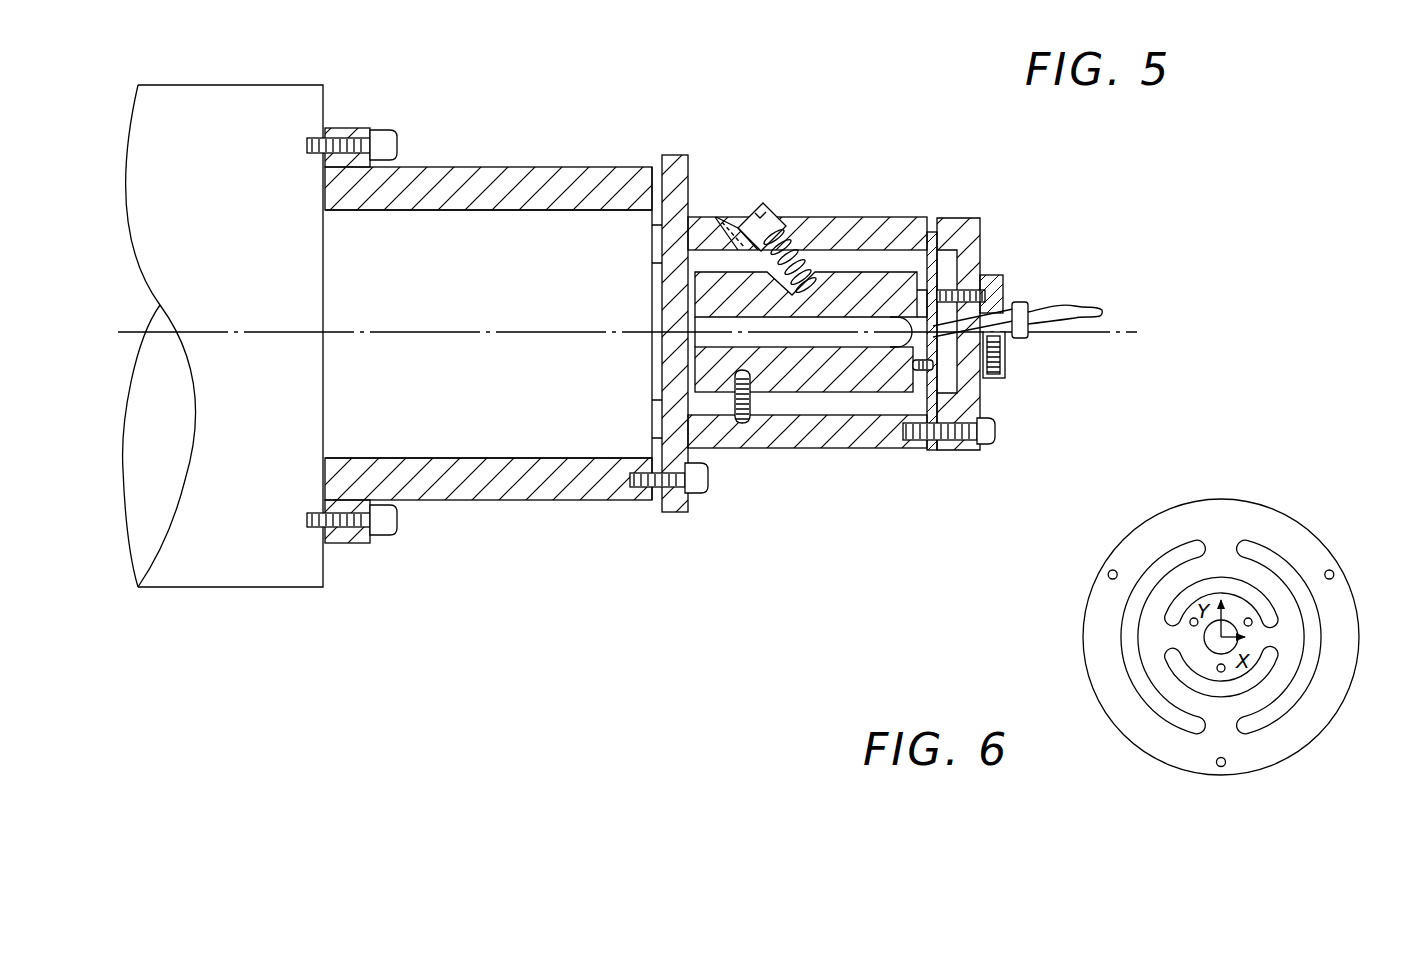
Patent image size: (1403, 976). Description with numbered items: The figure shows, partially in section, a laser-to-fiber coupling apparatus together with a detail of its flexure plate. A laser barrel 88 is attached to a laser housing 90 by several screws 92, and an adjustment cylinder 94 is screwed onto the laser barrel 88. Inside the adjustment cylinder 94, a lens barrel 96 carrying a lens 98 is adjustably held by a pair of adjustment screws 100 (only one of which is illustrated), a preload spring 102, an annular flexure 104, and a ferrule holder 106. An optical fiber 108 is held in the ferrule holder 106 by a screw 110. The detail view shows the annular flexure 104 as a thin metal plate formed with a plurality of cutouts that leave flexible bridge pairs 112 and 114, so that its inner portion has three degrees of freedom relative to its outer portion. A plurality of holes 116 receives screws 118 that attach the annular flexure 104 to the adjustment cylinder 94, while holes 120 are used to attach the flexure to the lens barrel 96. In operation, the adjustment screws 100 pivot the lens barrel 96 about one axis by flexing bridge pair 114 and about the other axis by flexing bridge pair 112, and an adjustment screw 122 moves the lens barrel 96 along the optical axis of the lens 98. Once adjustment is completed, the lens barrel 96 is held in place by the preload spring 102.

In FIG. 5, the laser barrel 88 is at (458, 165).
In FIG. 5, the laser housing 90 is at (283, 592).
In FIG. 5, the screws 92 is at (385, 137).
In FIG. 5, the adjustment cylinder 94 is at (872, 432).
In FIG. 5, the lens barrel 96 is at (713, 270).
In FIG. 5, the lens 98 is at (876, 298).
In FIG. 5, the adjustment screws 100 is at (743, 426).
In FIG. 5, the preload spring 102 is at (800, 245).
In FIG. 5, the annular flexure 104 is at (982, 396).
In FIG. 6, the annular flexure 104 is at (1155, 553).
In FIG. 5, the ferrule holder 106 is at (956, 236).
In FIG. 5, the optical fiber 108 is at (1068, 308).
In FIG. 5, the screw 110 is at (993, 380).
In FIG. 6, the bridge pair 112 is at (1218, 545).
In FIG. 6, the bridge pair 114 is at (1167, 632).
In FIG. 6, the holes 116 is at (1110, 571).
In FIG. 5, the screws 118 is at (990, 446).
In FIG. 6, the holes 120 is at (1225, 672).
In FIG. 5, the adjustment screw 122 is at (985, 273).